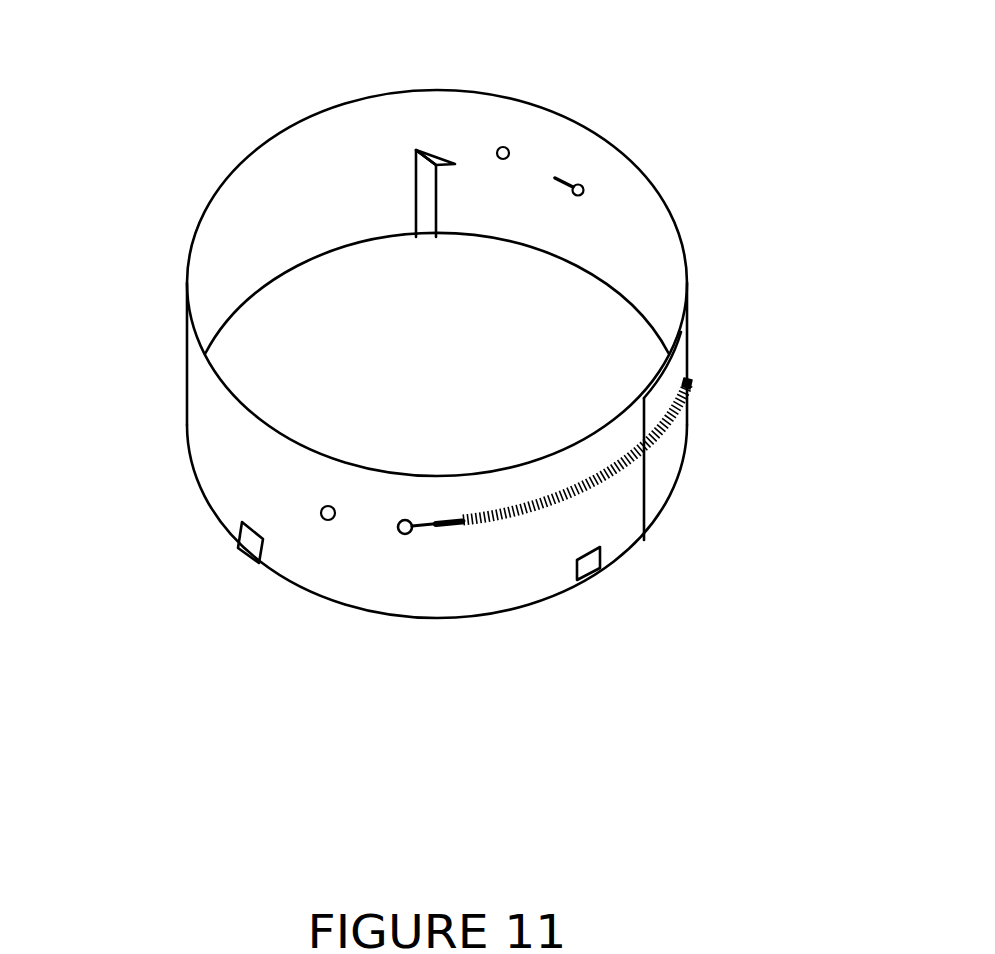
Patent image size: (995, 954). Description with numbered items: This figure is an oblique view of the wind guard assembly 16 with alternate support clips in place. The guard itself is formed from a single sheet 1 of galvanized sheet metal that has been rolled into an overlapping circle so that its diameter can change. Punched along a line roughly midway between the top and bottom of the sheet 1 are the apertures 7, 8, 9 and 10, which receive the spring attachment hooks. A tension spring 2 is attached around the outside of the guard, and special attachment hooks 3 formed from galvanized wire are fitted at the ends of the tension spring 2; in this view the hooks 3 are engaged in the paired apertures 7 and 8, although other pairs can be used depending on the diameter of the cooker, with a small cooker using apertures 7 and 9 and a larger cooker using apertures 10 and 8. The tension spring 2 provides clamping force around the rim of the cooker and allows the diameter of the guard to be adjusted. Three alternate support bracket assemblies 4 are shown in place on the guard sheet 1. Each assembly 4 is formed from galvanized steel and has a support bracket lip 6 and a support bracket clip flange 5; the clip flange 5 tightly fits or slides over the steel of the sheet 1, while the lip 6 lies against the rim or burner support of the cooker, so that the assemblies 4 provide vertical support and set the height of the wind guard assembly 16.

The sheet 1 is at (590, 127).
The tension spring 2 is at (527, 517).
The attachment hooks 3 is at (435, 527).
The alternate support bracket assemblies 4 is at (415, 183).
The support bracket clip flange 5 is at (240, 548).
The support bracket lip 6 is at (443, 157).
The aperture 7 is at (398, 531).
The aperture 8 is at (585, 185).
The aperture 9 is at (503, 146).
The aperture 10 is at (329, 506).
The wind guard assembly 16 is at (477, 358).